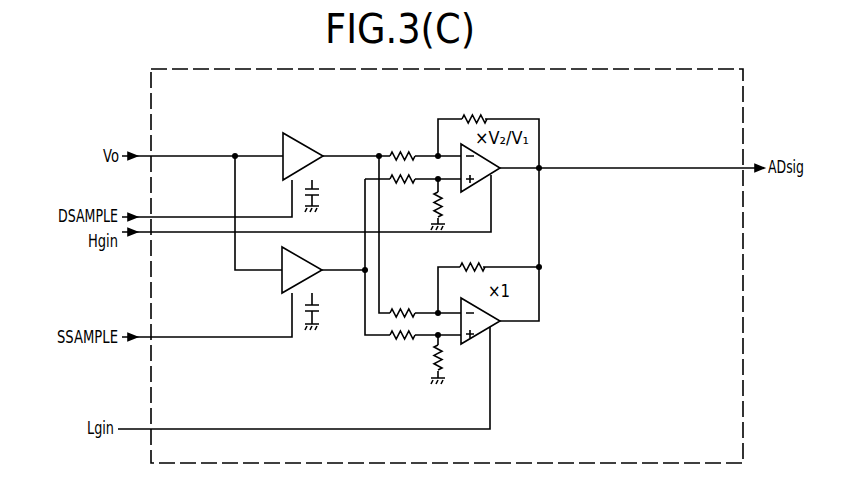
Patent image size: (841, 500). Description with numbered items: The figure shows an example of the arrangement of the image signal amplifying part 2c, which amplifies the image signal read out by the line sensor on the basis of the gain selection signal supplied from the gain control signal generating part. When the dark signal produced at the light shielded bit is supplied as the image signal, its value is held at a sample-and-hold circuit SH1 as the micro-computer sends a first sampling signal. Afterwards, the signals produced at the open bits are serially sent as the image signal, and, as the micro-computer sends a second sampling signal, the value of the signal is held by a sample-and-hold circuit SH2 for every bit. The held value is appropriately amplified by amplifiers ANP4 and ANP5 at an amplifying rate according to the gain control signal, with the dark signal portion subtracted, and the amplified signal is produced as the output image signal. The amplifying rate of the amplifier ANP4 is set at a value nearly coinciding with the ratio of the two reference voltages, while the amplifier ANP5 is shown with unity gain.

The image signal amplifying part 2c is at (583, 69).
The sample-and-hold circuit SH1 is at (307, 148).
The sample-and-hold circuit SH2 is at (308, 263).
The amplifier ANP4 is at (496, 172).
The amplifier ANP5 is at (494, 325).